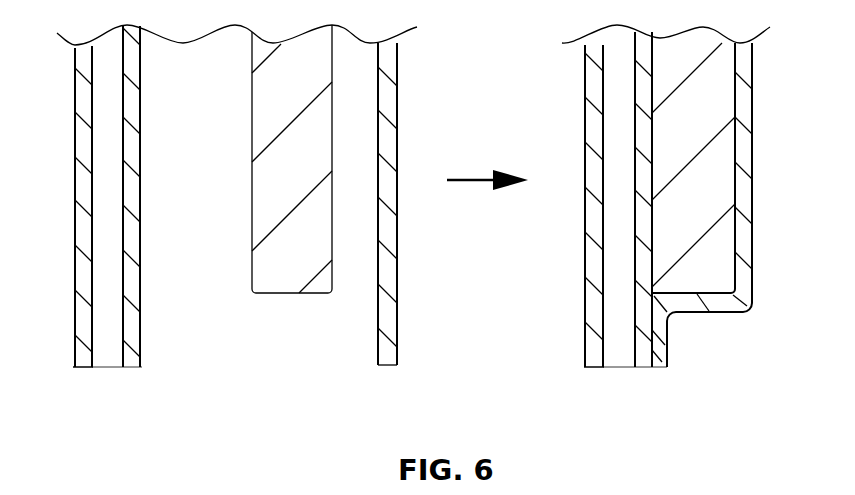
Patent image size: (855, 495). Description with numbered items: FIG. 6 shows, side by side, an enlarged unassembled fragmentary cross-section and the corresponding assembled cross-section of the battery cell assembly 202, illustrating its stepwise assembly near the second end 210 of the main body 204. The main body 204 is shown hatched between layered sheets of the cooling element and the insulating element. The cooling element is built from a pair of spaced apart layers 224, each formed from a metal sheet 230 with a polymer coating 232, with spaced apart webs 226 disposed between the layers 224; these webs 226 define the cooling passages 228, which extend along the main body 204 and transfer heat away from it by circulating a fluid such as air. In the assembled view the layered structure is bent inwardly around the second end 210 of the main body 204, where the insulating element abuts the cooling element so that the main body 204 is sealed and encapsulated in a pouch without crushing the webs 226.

The battery cell assembly 202 is at (428, 63).
The main body 204 is at (493, 159).
The second end 210 is at (287, 340).
The spaced apart layers 224 is at (131, 263).
The webs 226 is at (107, 170).
The cooling passages 228 is at (111, 370).
The metal sheet 230 is at (78, 370).
The polymer coating 232 is at (76, 211).